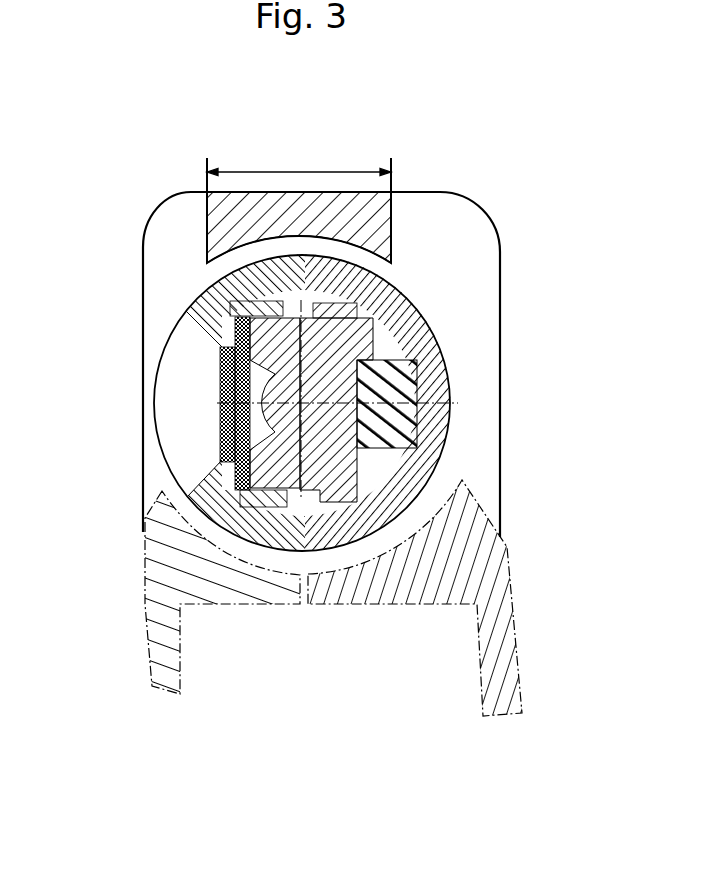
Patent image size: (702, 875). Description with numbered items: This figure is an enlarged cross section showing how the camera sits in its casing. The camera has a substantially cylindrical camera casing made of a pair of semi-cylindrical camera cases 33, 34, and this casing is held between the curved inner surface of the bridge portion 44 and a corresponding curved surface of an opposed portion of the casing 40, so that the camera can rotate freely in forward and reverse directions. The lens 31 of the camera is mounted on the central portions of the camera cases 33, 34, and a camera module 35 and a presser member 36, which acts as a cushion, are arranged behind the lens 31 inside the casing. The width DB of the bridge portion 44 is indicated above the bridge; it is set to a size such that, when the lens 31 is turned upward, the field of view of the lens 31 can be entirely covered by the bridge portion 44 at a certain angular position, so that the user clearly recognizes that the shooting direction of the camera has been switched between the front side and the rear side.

The lens 31 is at (220, 382).
The camera case 33 is at (206, 289).
The camera case 34 is at (403, 293).
The camera module 35 is at (303, 403).
The presser member 36 is at (417, 377).
The casing 40 is at (162, 568).
The bridge portion 44 is at (262, 208).
The width of the bridge portion DB is at (357, 173).